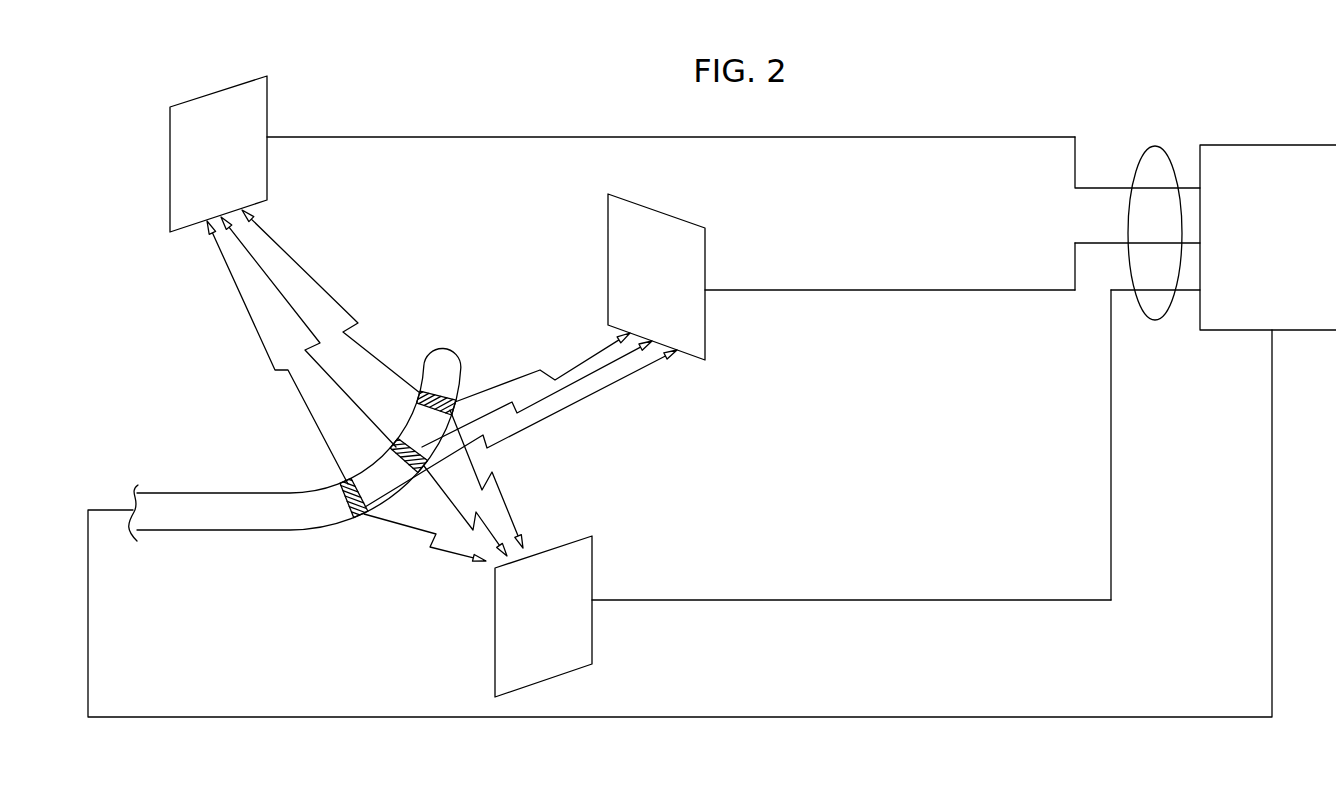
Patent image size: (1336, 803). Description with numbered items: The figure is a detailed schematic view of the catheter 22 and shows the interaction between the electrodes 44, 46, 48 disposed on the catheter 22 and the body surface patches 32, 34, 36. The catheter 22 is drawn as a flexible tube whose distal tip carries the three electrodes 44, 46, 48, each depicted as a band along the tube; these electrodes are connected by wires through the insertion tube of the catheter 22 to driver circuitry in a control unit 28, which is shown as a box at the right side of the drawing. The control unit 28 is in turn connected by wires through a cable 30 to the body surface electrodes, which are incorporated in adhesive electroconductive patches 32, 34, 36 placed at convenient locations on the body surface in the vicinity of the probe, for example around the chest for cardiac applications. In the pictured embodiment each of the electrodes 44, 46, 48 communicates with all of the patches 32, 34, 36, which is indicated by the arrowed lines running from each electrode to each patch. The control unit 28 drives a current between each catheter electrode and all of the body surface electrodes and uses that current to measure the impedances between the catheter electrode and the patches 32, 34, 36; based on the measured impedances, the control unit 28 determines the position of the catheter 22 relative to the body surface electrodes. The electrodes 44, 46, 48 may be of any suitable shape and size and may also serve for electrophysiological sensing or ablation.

The catheter 22 is at (200, 492).
The control unit 28 is at (1279, 145).
The cable 30 is at (1138, 166).
The body surface patch 32 is at (267, 102).
The body surface patch 34 is at (592, 568).
The body surface patch 36 is at (705, 248).
The electrode 44 is at (356, 517).
The electrode 46 is at (392, 447).
The electrode 48 is at (456, 400).